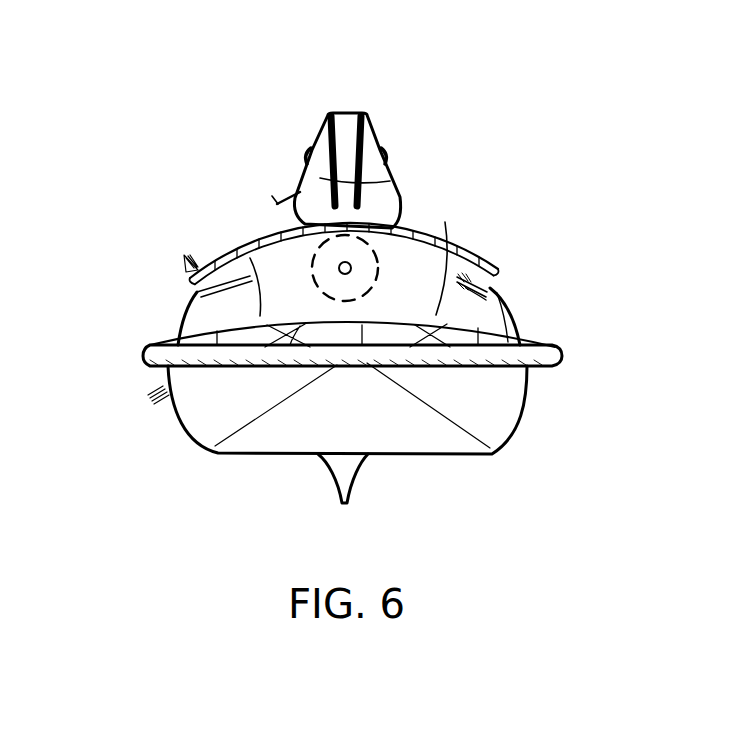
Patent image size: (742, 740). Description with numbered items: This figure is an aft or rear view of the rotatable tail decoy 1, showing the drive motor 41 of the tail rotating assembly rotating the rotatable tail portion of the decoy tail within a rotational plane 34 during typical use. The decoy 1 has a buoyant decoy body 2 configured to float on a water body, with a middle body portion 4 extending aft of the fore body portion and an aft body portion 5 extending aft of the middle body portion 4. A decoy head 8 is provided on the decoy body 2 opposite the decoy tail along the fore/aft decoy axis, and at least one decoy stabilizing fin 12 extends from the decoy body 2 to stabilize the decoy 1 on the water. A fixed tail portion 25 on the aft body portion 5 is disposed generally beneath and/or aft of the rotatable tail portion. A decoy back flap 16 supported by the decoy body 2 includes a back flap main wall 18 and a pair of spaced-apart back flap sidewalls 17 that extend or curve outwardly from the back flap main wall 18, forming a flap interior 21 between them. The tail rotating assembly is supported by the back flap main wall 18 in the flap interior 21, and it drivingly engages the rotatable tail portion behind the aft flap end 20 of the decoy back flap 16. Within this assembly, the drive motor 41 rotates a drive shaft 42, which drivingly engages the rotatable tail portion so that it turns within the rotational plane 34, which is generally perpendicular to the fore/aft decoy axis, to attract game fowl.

The rotatable tail decoy 1 is at (209, 114).
The decoy body 2 is at (145, 402).
The middle body portion 4 is at (530, 388).
The aft body portion 5 is at (435, 437).
The decoy head 8 is at (348, 130).
The decoy stabilizing fin 12 is at (343, 506).
The decoy back flap 16 is at (186, 266).
The back flap sidewalls 17 is at (173, 283).
The back flap main wall 18 is at (322, 228).
The aft flap end 20 is at (222, 260).
The flap interior 21 is at (495, 302).
The fixed tail portion 25 is at (547, 357).
The rotational plane 34 is at (272, 196).
The drive motor 41 is at (440, 280).
The drive shaft 42 is at (352, 263).